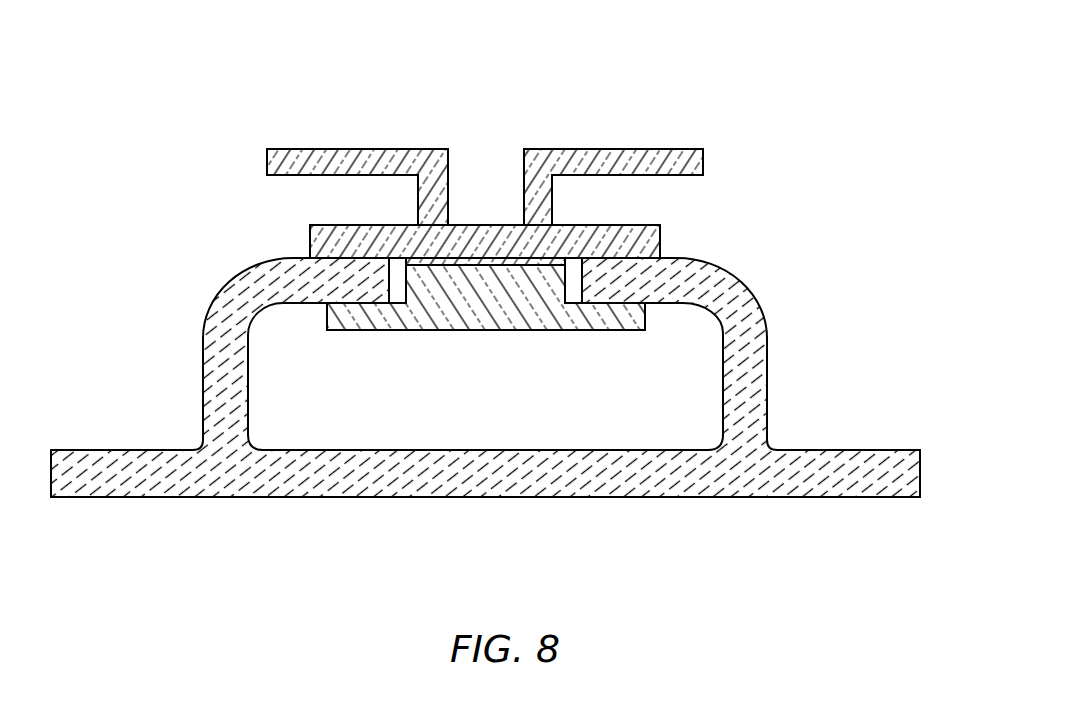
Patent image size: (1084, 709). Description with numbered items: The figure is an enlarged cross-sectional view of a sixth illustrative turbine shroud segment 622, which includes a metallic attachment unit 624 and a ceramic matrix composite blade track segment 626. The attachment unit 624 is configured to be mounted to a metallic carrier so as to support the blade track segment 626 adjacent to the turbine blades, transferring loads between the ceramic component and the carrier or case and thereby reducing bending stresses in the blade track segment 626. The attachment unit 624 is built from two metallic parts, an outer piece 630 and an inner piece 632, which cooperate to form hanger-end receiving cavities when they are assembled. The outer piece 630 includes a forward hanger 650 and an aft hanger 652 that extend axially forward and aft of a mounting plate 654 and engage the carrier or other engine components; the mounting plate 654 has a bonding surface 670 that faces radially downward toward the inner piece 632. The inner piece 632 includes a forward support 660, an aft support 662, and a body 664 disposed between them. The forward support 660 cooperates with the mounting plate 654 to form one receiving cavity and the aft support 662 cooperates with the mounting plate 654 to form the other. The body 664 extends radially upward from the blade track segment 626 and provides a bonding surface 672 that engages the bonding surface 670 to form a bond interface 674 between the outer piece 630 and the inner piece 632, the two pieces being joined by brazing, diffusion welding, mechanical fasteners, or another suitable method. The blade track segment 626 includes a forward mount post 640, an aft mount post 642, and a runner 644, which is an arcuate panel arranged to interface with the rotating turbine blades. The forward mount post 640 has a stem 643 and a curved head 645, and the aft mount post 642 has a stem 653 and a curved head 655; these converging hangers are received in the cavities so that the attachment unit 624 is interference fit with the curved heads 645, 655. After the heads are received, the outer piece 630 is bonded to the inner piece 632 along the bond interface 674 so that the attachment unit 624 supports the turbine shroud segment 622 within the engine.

The turbine shroud segment 622 is at (160, 118).
The attachment unit 624 is at (838, 242).
The ceramic matrix composite blade track segment 626 is at (265, 545).
The outer piece 630 is at (908, 184).
The inner piece 632 is at (673, 325).
The forward mount post 640 is at (250, 405).
The aft mount post 642 is at (718, 410).
The stem 643 is at (203, 390).
The runner 644 is at (410, 498).
The curved head 645 is at (223, 285).
The forward hanger 650 is at (362, 148).
The aft hanger 652 is at (605, 148).
The stem 653 is at (768, 390).
The mounting plate 654 is at (308, 242).
The curved head 655 is at (760, 291).
The forward support 660 is at (352, 334).
The aft support 662 is at (612, 333).
The body 664 is at (455, 334).
The bonding surface 670 is at (500, 262).
The bonding surface 672 is at (440, 266).
The bond interface 674 is at (520, 266).